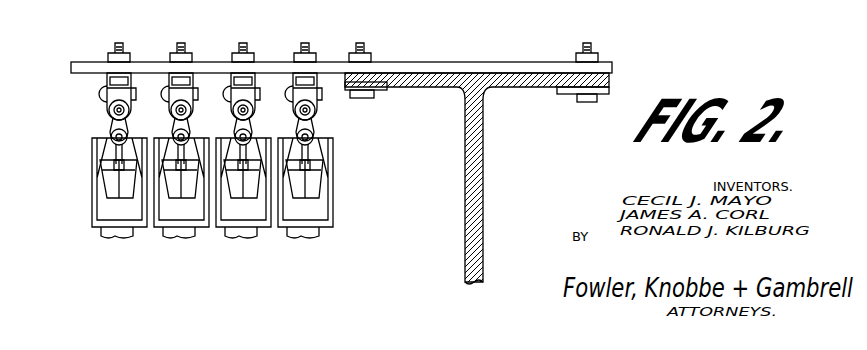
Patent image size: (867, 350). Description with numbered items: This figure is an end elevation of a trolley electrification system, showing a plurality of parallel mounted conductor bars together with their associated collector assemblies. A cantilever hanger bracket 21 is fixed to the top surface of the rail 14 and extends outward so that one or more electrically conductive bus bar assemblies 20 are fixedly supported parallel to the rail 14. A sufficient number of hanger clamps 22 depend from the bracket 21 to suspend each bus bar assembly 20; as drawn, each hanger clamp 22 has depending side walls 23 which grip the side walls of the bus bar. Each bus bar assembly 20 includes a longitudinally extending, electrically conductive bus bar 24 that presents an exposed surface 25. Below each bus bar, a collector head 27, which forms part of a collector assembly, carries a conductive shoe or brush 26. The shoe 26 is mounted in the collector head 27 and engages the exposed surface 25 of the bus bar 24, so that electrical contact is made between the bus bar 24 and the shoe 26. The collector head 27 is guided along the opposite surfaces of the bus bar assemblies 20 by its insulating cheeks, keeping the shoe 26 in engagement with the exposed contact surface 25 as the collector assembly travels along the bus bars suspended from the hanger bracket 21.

The rail 14 is at (465, 184).
The bus bar assembly 20 is at (110, 128).
The cantilever hanger bracket 21 is at (86, 62).
The hanger clamp 22 is at (165, 78).
The side wall 23 is at (107, 76).
The bus bar 24 is at (152, 78).
The exposed surface 25 is at (234, 100).
The conductive shoe 26 is at (176, 167).
The collector head 27 is at (98, 212).